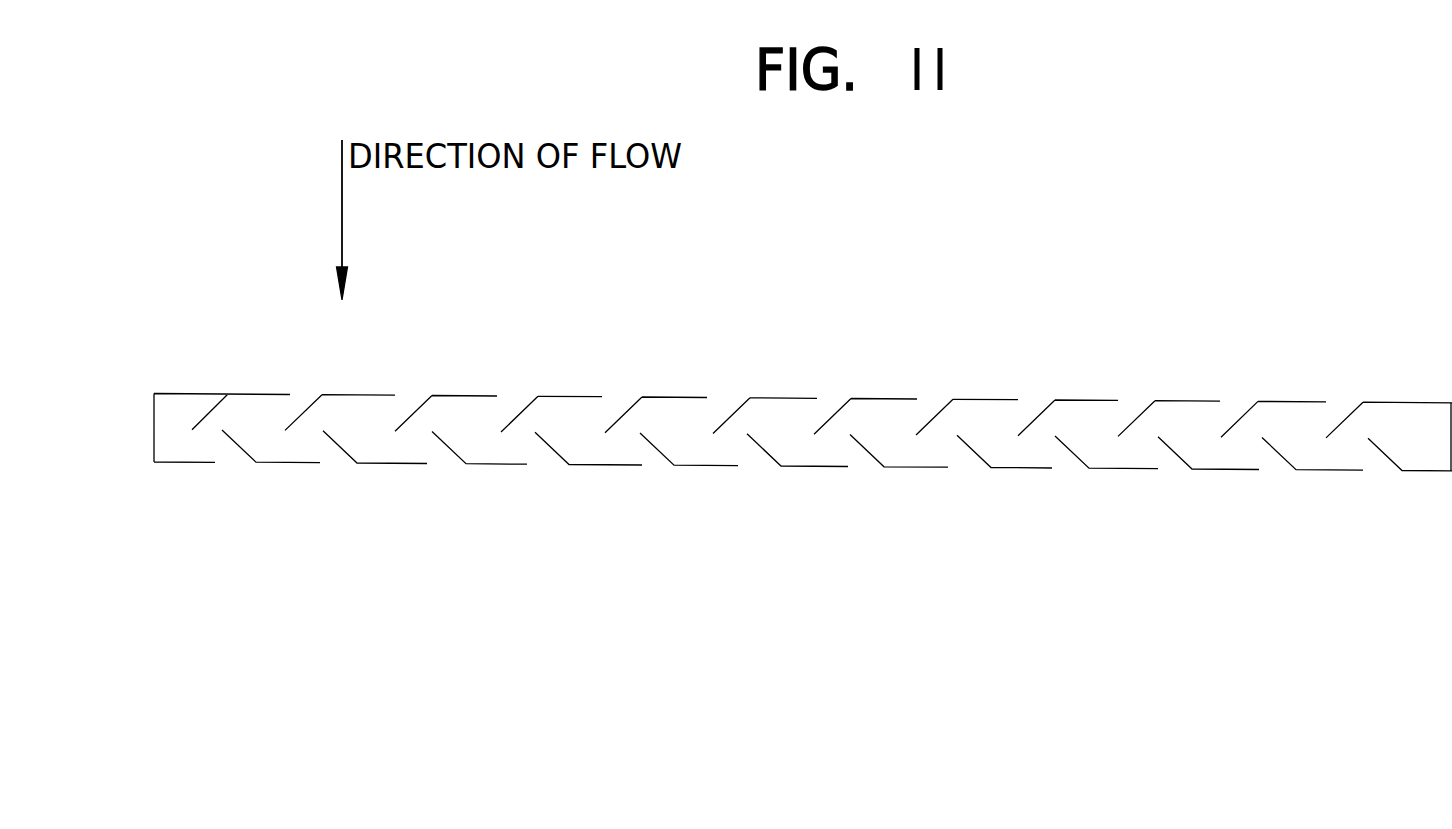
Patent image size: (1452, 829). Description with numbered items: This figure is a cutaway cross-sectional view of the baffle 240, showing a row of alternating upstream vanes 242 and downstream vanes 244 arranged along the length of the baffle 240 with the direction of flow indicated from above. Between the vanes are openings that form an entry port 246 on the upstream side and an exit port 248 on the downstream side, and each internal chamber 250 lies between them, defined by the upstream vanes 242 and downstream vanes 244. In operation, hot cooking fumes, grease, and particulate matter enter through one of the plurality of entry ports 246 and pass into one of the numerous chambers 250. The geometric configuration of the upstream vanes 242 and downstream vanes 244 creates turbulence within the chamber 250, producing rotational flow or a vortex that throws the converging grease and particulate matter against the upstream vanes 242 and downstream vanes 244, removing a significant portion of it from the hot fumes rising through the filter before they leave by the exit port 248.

The baffle 240 is at (188, 392).
The upstream vanes 242 is at (1000, 400).
The downstream vanes 244 is at (1137, 471).
The entry port 246 is at (513, 400).
The exit port 248 is at (437, 454).
The internal chamber 250 is at (782, 420).